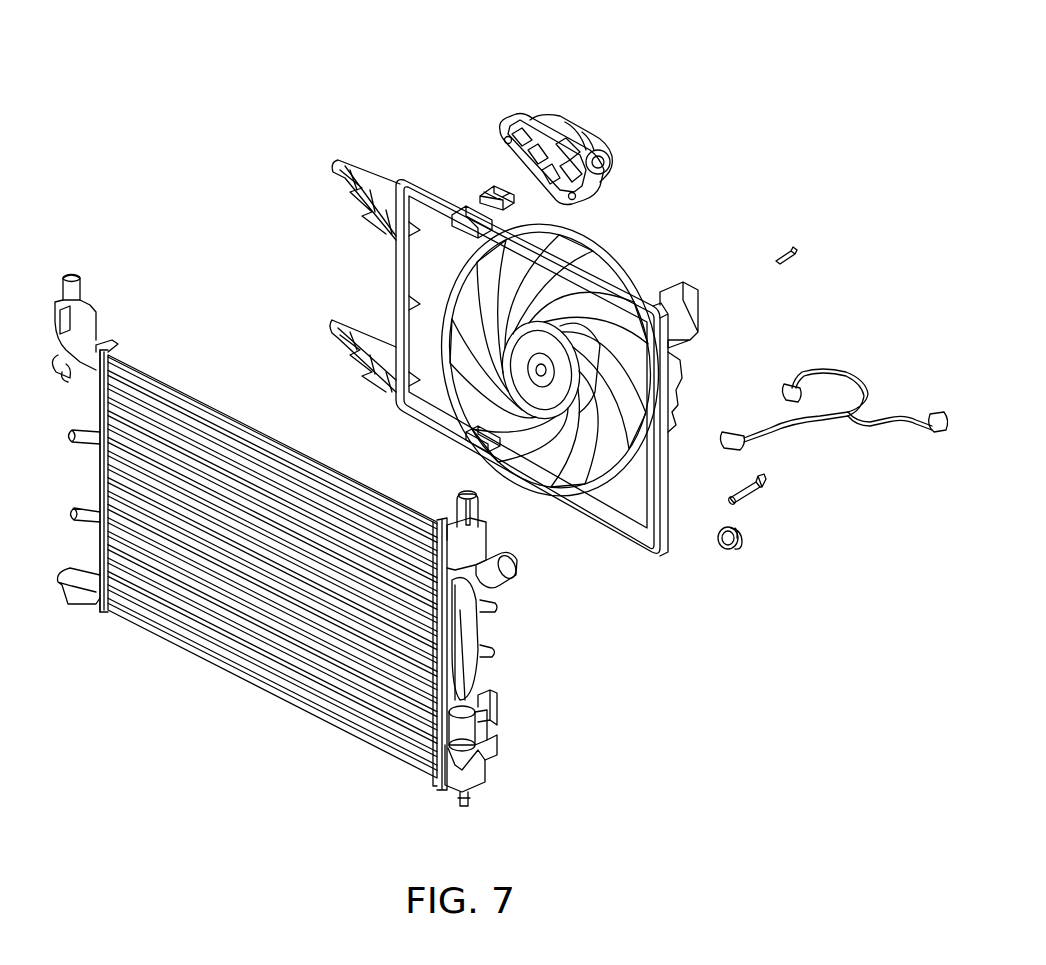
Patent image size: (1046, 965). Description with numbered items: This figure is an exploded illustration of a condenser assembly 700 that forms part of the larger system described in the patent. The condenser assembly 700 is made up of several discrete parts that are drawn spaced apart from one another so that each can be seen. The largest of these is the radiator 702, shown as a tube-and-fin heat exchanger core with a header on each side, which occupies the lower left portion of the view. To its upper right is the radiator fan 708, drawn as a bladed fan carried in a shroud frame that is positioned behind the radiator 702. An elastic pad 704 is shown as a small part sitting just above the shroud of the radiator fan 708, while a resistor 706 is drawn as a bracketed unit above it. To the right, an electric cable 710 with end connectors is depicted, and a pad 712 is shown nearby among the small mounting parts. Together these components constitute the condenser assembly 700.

The condenser assembly 700 is at (204, 44).
The radiator 702 is at (457, 648).
The elastic pad 704 is at (482, 186).
The resistor 706 is at (572, 128).
The radiator fan 708 is at (604, 270).
The electric cable 710 is at (812, 425).
The pad 712 is at (733, 550).